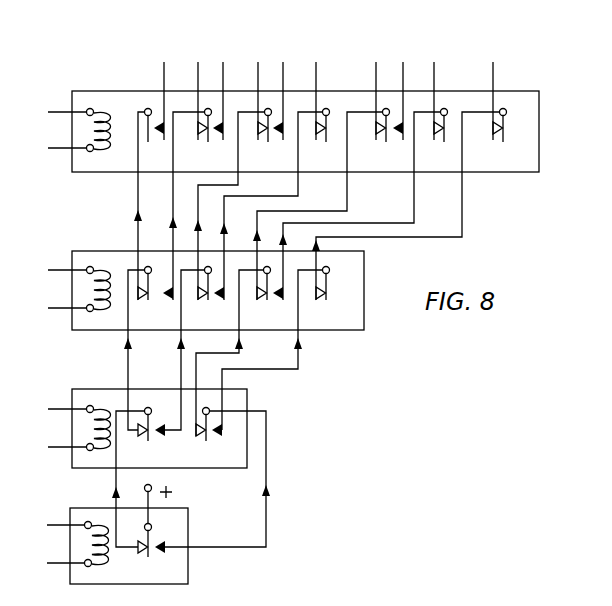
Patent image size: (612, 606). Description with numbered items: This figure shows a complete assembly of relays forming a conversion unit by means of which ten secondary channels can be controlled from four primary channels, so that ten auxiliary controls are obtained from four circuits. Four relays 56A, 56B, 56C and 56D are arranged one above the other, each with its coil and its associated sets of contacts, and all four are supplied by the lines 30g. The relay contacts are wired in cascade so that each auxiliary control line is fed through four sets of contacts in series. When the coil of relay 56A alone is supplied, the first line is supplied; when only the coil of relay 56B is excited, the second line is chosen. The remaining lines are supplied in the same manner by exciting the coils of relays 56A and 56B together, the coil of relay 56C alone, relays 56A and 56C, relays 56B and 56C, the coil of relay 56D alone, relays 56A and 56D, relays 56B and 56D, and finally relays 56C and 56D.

The lines 30g is at (57, 124).
The relay 56A is at (101, 110).
The relay 56B is at (96, 268).
The relay 56C is at (97, 407).
The relay 56D is at (95, 522).